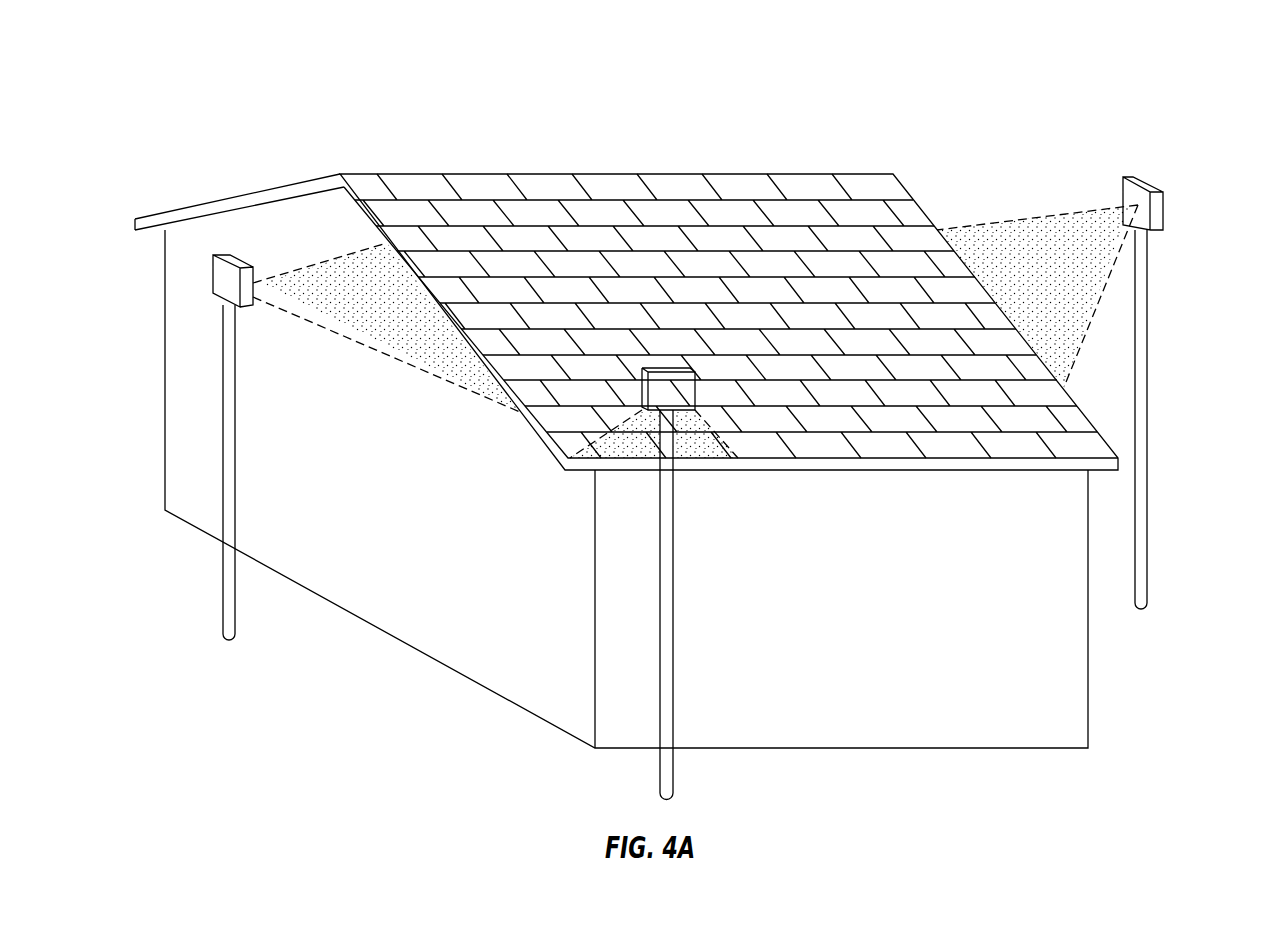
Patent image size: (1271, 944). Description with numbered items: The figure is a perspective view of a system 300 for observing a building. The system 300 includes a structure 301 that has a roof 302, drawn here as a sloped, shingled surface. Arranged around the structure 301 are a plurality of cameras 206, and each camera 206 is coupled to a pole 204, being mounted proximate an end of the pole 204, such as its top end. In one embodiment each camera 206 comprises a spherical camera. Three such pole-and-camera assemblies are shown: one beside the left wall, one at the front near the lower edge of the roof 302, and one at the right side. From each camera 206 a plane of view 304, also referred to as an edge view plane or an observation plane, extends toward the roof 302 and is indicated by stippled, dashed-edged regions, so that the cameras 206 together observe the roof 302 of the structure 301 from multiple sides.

The system 300 is at (675, 422).
The structure 301 is at (423, 175).
The roof 302 is at (687, 265).
The plane of view 304 is at (320, 258).
The camera 206 is at (213, 273).
The pole 204 is at (223, 568).